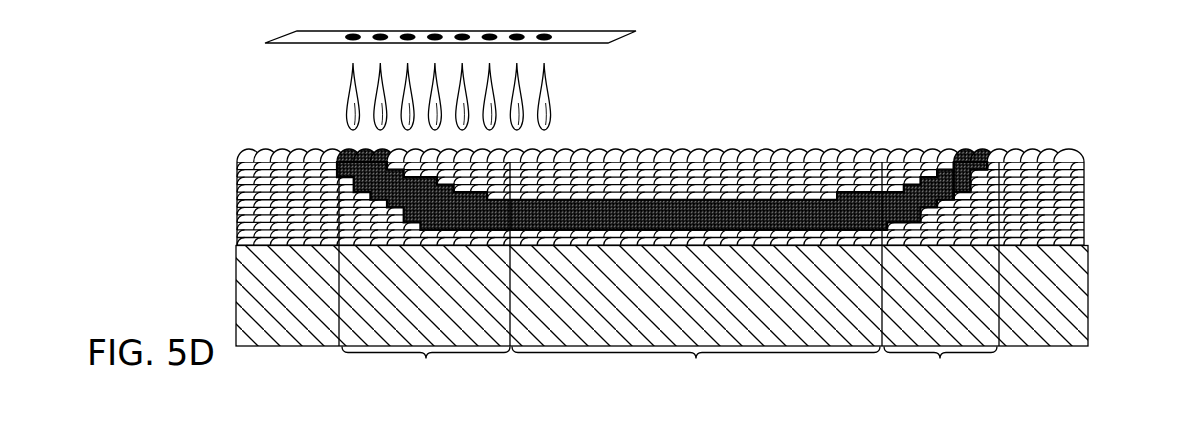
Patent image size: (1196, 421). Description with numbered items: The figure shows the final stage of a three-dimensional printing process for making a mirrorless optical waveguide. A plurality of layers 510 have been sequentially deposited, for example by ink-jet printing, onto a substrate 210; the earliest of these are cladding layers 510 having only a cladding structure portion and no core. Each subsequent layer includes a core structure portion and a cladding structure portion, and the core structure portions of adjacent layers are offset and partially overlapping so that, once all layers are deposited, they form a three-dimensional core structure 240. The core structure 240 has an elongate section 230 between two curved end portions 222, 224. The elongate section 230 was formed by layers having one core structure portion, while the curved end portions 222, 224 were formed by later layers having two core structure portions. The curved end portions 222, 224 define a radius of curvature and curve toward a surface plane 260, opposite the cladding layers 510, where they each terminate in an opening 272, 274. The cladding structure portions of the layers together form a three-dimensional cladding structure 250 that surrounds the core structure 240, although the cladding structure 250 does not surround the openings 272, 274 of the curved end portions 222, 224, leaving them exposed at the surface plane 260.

The substrate 210 is at (1088, 298).
The curved end portion 222 is at (424, 273).
The curved end portion 224 is at (941, 273).
The elongate section 230 is at (697, 273).
The three-dimensional core structure 240 is at (676, 217).
The three-dimensional cladding structure 250 is at (774, 179).
The surface plane 260 is at (1072, 150).
The opening 272 is at (358, 149).
The opening 274 is at (990, 176).
The layers 510 is at (697, 164).